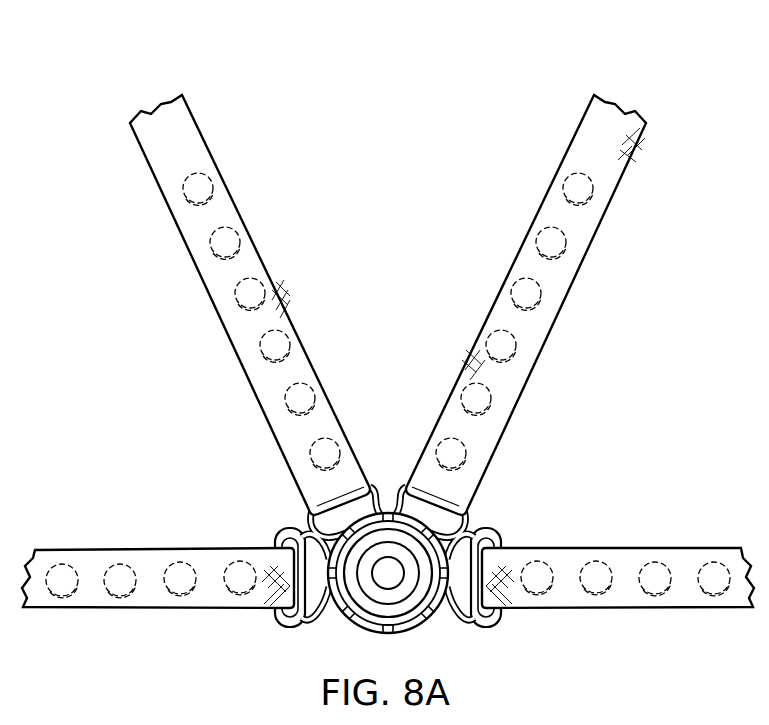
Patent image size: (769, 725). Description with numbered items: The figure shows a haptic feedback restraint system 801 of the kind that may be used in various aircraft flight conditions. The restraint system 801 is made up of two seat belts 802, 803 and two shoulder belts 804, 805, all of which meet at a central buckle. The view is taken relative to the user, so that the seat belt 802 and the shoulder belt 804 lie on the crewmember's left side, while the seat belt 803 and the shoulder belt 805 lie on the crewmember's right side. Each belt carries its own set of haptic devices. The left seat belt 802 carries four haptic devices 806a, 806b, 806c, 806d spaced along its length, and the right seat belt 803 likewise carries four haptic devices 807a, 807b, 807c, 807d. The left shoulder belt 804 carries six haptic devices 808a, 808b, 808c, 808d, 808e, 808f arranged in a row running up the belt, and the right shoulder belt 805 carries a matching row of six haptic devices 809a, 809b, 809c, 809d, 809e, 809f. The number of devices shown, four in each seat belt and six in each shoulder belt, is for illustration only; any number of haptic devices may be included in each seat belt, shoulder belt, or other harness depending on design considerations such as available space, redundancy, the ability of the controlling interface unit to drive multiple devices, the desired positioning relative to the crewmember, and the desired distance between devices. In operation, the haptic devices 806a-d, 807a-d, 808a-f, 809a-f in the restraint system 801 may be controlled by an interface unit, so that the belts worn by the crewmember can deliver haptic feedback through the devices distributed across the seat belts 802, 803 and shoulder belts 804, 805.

The restraint system 801 is at (264, 84).
The seat belt 802 is at (50, 546).
The seat belt 803 is at (727, 546).
The shoulder belt 804 is at (247, 212).
The shoulder belt 805 is at (492, 300).
The haptic device 806a is at (227, 565).
The haptic device 806b is at (166, 595).
The haptic device 806c is at (106, 565).
The haptic device 806d is at (60, 597).
The haptic device 807a is at (549, 565).
The haptic device 807b is at (608, 595).
The haptic device 807c is at (665, 565).
The haptic device 807d is at (719, 595).
The haptic device 808a is at (311, 452).
The haptic device 808b is at (286, 397).
The haptic device 808c is at (261, 344).
The haptic device 808d is at (236, 292).
The haptic device 808e is at (211, 240).
The haptic device 808f is at (184, 187).
The haptic device 809a is at (465, 452).
The haptic device 809b is at (490, 397).
The haptic device 809c is at (515, 344).
The haptic device 809d is at (540, 292).
The haptic device 809e is at (565, 240).
The haptic device 809f is at (592, 187).